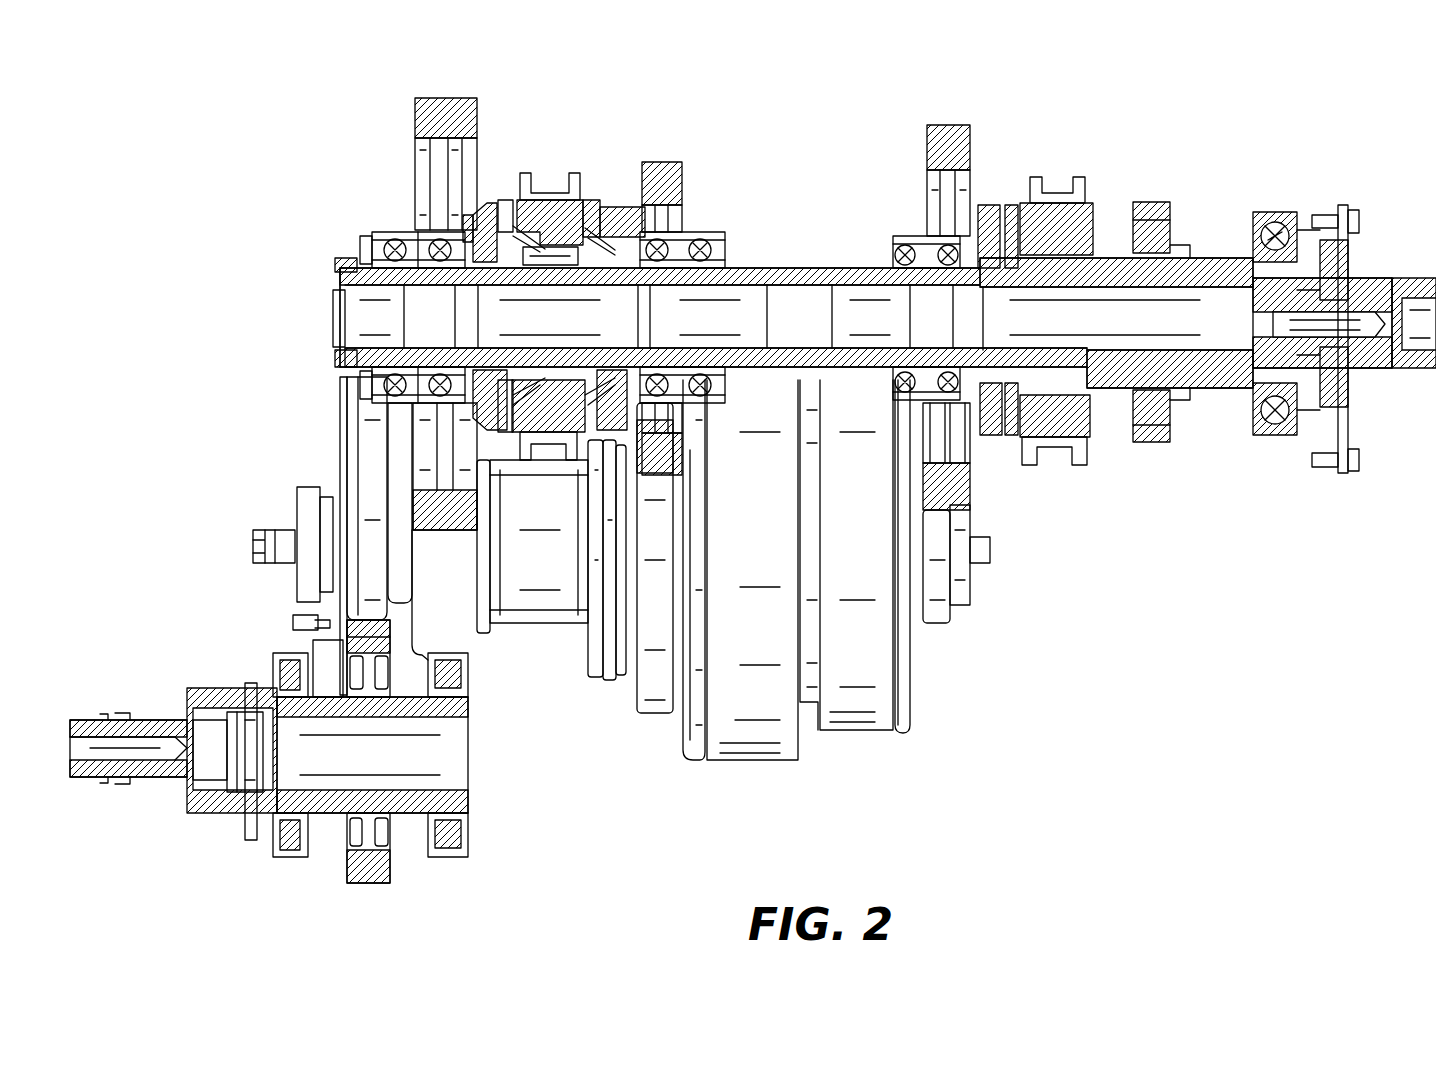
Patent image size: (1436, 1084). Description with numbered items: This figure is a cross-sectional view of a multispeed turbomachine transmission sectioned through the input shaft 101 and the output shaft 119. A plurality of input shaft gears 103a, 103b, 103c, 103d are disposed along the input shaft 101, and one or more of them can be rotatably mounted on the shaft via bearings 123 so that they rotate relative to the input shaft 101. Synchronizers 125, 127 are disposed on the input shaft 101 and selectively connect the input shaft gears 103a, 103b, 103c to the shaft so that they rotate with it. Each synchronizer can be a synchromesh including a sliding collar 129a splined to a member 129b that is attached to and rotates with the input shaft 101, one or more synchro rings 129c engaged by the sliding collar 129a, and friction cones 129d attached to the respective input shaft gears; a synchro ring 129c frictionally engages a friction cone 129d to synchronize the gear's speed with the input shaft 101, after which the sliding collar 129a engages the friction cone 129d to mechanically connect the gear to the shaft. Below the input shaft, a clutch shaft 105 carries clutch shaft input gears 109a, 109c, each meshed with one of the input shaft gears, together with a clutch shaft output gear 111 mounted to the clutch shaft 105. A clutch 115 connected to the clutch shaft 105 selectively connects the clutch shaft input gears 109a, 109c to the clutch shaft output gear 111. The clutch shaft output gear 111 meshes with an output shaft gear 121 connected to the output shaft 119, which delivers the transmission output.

The input shaft 101 is at (1209, 222).
The input shaft gear 103a is at (435, 128).
The input shaft gear 103b is at (947, 134).
The input shaft gear 103c is at (1148, 212).
The input shaft gear 103d is at (657, 172).
The clutch shaft 105 is at (960, 583).
The clutch shaft input gear 109a is at (458, 622).
The clutch shaft input gear 109c is at (655, 695).
The clutch shaft output gear 111 is at (367, 453).
The clutch 115 is at (822, 762).
The output shaft 119 is at (185, 708).
The output shaft gear 121 is at (388, 850).
The bearing 123 is at (443, 249).
The synchronizer 125 is at (552, 226).
The synchronizer 127 is at (988, 226).
The sliding collar 129a is at (550, 195).
The member 129b is at (585, 210).
The synchro ring 129c is at (509, 205).
The friction cone 129d is at (487, 213).